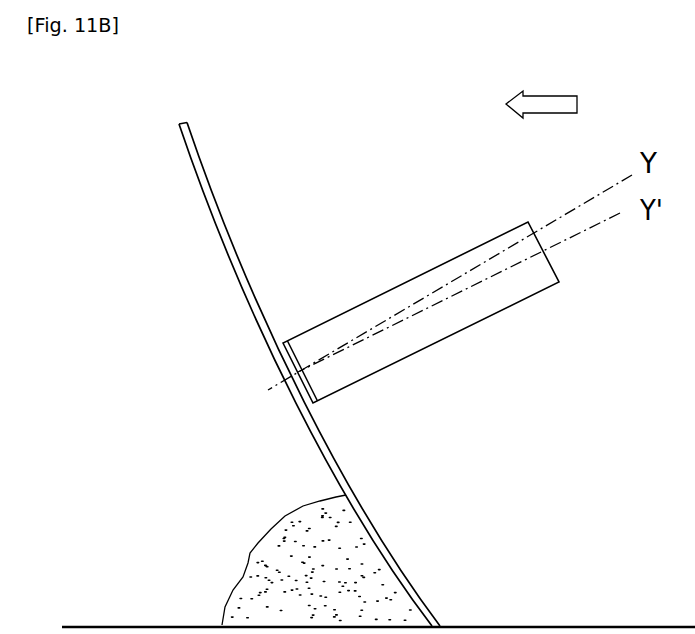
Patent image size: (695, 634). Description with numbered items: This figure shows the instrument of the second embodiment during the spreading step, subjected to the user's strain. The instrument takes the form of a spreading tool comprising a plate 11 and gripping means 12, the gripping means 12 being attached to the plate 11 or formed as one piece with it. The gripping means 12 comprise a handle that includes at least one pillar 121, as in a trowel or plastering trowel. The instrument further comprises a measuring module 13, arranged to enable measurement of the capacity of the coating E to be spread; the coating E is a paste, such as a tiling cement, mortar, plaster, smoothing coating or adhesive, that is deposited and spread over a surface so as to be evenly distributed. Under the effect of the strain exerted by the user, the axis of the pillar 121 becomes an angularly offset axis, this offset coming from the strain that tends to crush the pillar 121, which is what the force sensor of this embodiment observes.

The plate 11 is at (203, 127).
The gripping means 12 is at (382, 286).
The pillar 121 is at (447, 318).
The measuring module 13 is at (313, 388).
The coating E is at (260, 576).